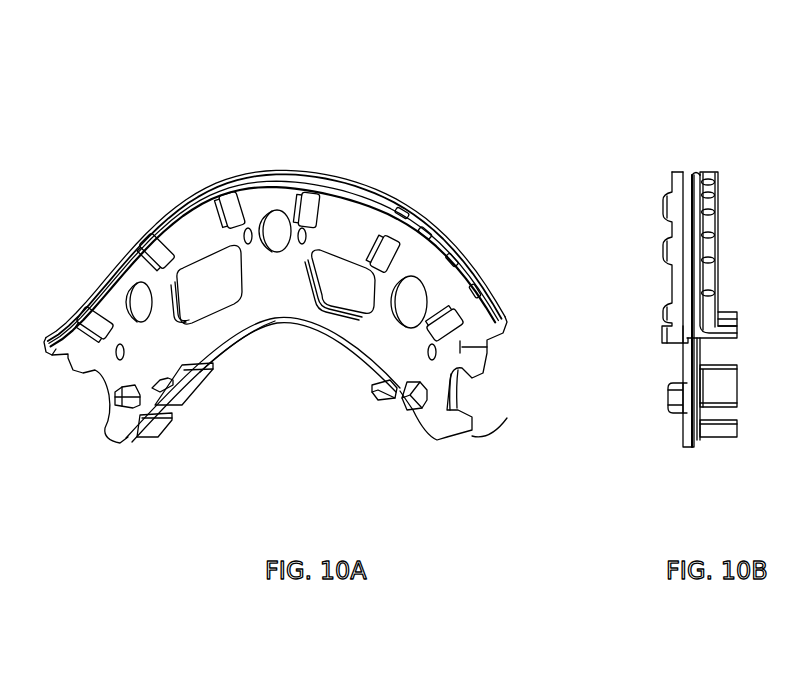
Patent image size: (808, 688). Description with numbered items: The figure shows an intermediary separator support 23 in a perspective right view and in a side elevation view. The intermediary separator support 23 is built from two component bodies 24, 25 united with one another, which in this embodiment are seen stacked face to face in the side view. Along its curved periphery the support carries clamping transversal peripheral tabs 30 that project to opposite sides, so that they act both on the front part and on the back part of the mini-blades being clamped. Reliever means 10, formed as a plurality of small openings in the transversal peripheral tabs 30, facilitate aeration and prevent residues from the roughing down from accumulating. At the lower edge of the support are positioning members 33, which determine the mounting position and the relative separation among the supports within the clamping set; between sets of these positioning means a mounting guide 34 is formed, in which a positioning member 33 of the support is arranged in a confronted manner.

In FIG. 10A, the reliever means 10 is at (452, 260).
In FIG. 10A, the intermediary separator support 23 is at (414, 191).
In FIG. 10B, the intermediary separator support 23 is at (682, 154).
In FIG. 10B, the component body 24 is at (680, 295).
In FIG. 10B, the component body 25 is at (717, 275).
In FIG. 10A, the clamping transversal peripheral tabs 30 is at (172, 207).
In FIG. 10A, the positioning members 33 is at (373, 392).
In FIG. 10B, the positioning members 33 is at (667, 405).
In FIG. 10A, the mounting guide 34 is at (398, 388).